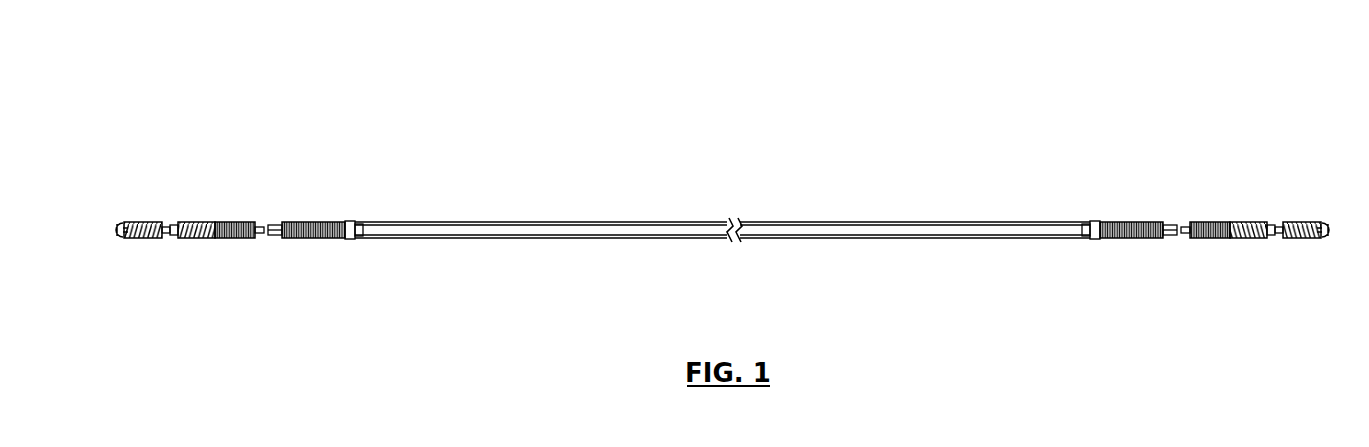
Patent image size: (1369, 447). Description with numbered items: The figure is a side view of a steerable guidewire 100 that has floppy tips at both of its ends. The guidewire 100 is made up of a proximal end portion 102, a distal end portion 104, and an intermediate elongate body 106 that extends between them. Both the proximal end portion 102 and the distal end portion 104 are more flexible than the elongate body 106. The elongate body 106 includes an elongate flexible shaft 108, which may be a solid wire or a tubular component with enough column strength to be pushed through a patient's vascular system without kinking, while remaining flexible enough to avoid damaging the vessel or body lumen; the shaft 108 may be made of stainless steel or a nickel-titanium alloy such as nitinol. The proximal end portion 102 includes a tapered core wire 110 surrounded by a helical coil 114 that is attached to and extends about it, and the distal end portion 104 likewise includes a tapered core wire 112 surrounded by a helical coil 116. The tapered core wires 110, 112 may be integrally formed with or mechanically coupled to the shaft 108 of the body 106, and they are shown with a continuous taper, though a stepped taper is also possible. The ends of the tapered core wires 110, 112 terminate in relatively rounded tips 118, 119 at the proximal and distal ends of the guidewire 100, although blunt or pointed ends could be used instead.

The steerable guidewire 100 is at (283, 116).
The proximal end portion 102 is at (116, 207).
The distal end portion 104 is at (1328, 207).
The elongate body 106 is at (1093, 207).
The elongate flexible shaft 108 is at (974, 252).
The tapered core wire 110 is at (259, 242).
The tapered core wire 112 is at (1184, 242).
The helical coil 114 is at (323, 242).
The helical coil 116 is at (1125, 242).
The rounded tip 118 is at (116, 242).
The rounded tip 119 is at (1330, 242).